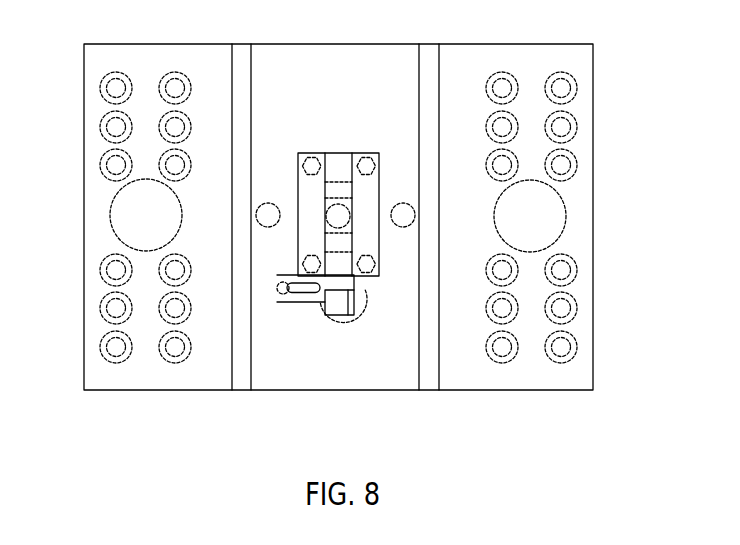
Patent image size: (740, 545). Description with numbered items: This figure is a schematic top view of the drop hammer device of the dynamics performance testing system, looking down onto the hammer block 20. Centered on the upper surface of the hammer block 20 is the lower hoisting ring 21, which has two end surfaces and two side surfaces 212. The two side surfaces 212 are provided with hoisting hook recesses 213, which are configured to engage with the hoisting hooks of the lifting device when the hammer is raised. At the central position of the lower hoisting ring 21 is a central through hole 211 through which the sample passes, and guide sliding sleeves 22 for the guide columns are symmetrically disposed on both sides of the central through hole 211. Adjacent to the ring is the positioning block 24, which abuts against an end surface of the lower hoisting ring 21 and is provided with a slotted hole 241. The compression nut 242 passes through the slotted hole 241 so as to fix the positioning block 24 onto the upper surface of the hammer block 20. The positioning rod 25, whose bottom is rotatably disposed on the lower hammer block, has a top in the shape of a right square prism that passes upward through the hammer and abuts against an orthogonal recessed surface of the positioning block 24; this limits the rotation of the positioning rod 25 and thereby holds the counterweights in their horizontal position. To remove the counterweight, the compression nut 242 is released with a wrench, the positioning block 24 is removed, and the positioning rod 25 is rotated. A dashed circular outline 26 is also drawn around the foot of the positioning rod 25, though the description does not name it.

The hammer block 20 is at (593, 72).
The lower hoisting ring 21 is at (368, 160).
The central through hole 211 is at (340, 215).
The side surface 212 is at (318, 226).
The hoisting hook recess 213 is at (330, 183).
The guide sliding sleeve 22 is at (126, 213).
The positioning block 24 is at (272, 303).
The slotted hole 241 is at (302, 297).
The compression nut 242 is at (288, 291).
The positioning rod 25 is at (340, 307).
The shaft hole 26 is at (360, 300).